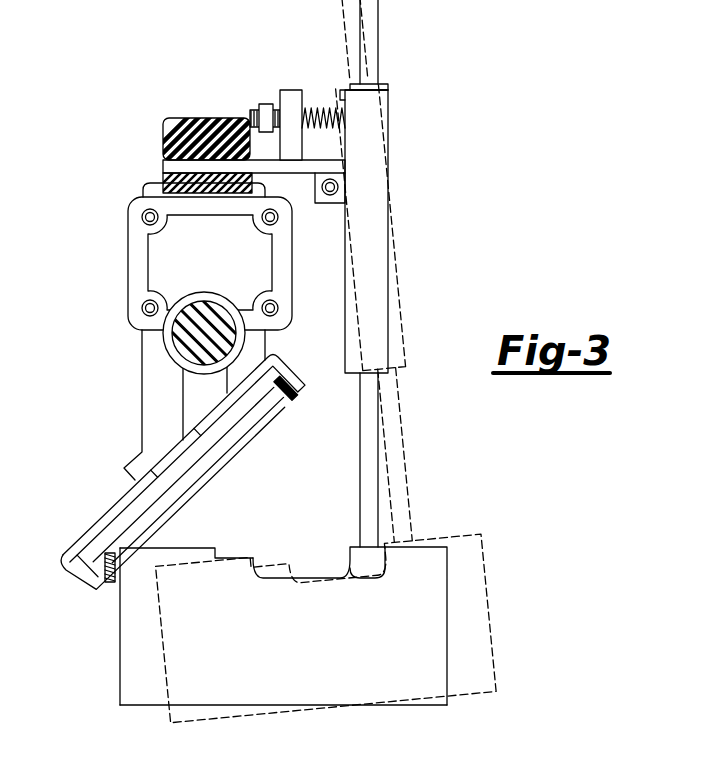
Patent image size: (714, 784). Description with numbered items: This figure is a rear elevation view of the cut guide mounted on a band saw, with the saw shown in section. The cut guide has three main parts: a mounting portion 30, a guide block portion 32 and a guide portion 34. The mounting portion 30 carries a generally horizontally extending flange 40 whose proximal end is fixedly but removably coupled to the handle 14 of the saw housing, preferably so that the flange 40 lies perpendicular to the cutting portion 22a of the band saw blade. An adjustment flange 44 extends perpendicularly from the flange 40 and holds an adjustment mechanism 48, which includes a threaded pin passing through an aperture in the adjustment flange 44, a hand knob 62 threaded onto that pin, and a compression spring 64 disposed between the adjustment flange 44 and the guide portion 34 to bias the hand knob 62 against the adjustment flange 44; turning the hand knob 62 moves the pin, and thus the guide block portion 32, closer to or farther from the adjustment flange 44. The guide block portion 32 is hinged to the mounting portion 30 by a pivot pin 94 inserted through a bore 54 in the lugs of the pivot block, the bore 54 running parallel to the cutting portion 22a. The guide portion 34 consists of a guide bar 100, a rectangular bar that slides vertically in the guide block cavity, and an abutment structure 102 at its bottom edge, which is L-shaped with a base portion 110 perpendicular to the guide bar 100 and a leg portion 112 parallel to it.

The handle 14 is at (92, 229).
The cutting portion of the band saw blade 22a is at (103, 568).
The mounting portion 30 is at (224, 98).
The guide block portion 32 is at (443, 186).
The guide portion 34 is at (457, 597).
The flange 40 is at (178, 165).
The adjustment flange 44 is at (295, 92).
The adjustment mechanism 48 is at (327, 134).
The bore 54 is at (340, 198).
The hand knob 62 is at (267, 104).
The compression spring 64 is at (322, 110).
The pivot pin 94 is at (327, 196).
The guide bar 100 is at (372, 495).
The abutment structure 102 is at (167, 672).
The base portion 110 is at (197, 547).
The leg portion 112 is at (300, 683).